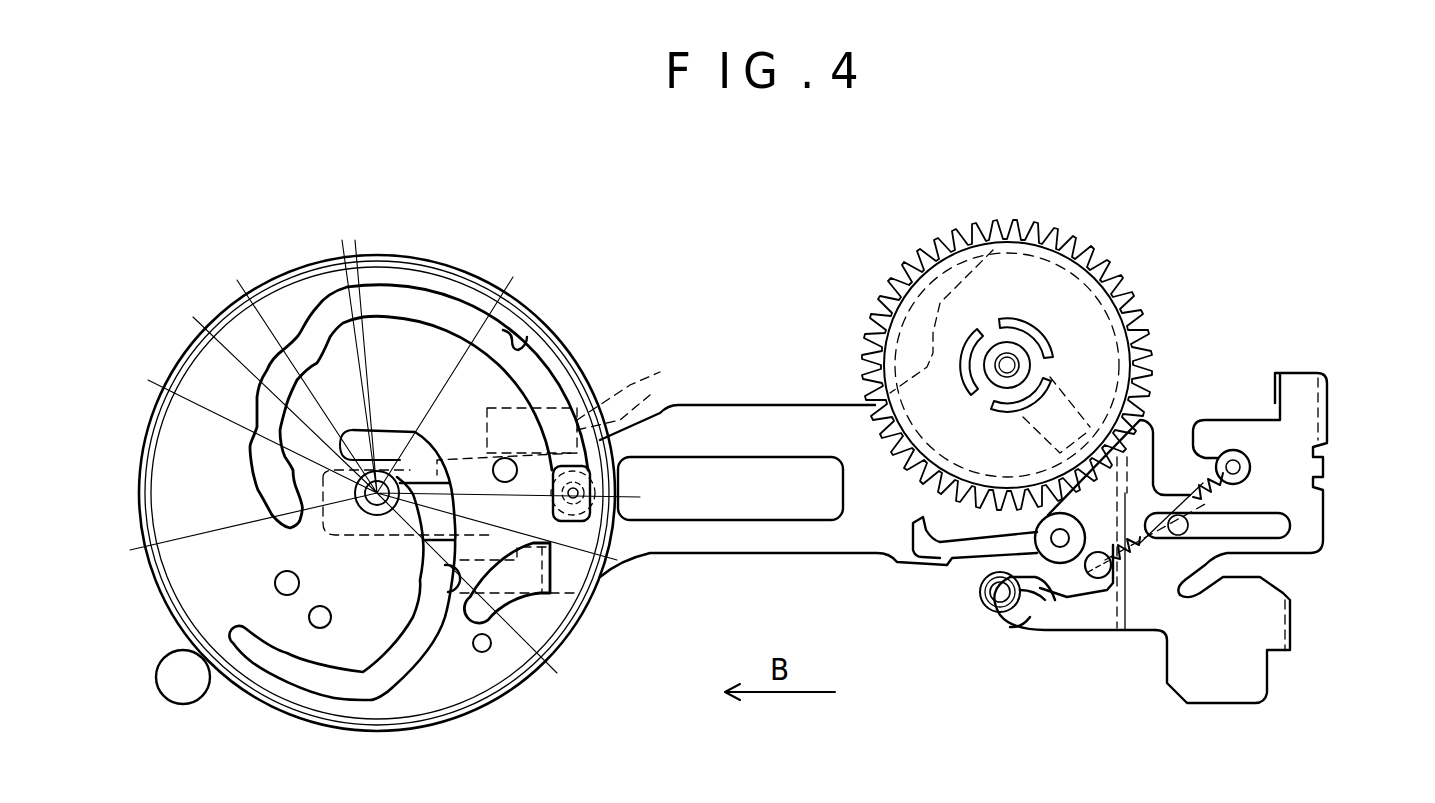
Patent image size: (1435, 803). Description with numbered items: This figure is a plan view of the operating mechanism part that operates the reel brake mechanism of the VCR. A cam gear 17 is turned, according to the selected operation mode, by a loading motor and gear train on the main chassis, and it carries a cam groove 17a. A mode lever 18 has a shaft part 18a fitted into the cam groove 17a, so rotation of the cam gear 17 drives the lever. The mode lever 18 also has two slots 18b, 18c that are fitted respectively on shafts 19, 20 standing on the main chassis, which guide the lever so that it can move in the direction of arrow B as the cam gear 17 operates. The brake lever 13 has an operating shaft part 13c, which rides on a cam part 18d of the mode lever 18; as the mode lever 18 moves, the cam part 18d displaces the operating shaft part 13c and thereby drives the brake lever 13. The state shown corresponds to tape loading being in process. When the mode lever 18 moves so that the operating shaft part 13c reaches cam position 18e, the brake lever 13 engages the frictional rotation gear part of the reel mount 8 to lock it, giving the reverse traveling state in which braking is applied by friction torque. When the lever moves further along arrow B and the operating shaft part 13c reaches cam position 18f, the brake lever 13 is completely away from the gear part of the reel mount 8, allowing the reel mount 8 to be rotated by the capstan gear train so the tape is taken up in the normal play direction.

The reel mount 8 is at (1072, 305).
The brake lever 13 is at (1150, 425).
The operating shaft part 13c is at (980, 598).
The cam gear 17 is at (293, 307).
The cam groove 17a is at (515, 340).
The mode lever 18 is at (781, 405).
The shaft part 18a is at (650, 395).
The slot 18b is at (575, 440).
The slot 18c is at (1285, 520).
The cam part 18d is at (1042, 600).
The cam position 18e is at (1030, 600).
The cam position 18f is at (1093, 580).
The shaft 19 is at (377, 493).
The shaft 20 is at (1160, 540).